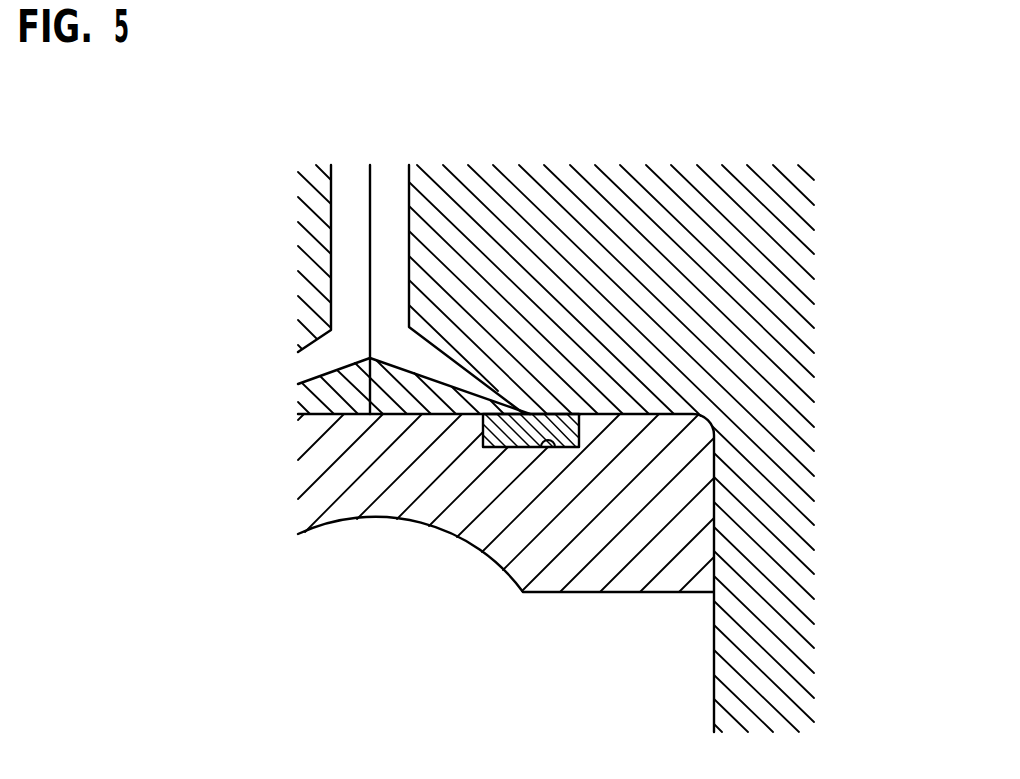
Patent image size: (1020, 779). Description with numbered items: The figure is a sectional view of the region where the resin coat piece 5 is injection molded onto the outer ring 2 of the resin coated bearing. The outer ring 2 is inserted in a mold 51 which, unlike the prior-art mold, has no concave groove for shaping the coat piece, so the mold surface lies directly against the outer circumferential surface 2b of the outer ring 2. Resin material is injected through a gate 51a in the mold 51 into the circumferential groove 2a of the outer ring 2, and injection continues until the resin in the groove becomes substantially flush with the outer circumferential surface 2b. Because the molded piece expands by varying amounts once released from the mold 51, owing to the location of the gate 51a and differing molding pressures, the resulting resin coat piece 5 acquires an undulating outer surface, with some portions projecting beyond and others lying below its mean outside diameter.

The outer ring 2 is at (675, 530).
The circumferential groove 2a is at (557, 448).
The outer circumferential surface 2b is at (316, 414).
The resin coat piece 5 is at (506, 418).
The mold 51 is at (578, 248).
The gate 51a is at (392, 208).